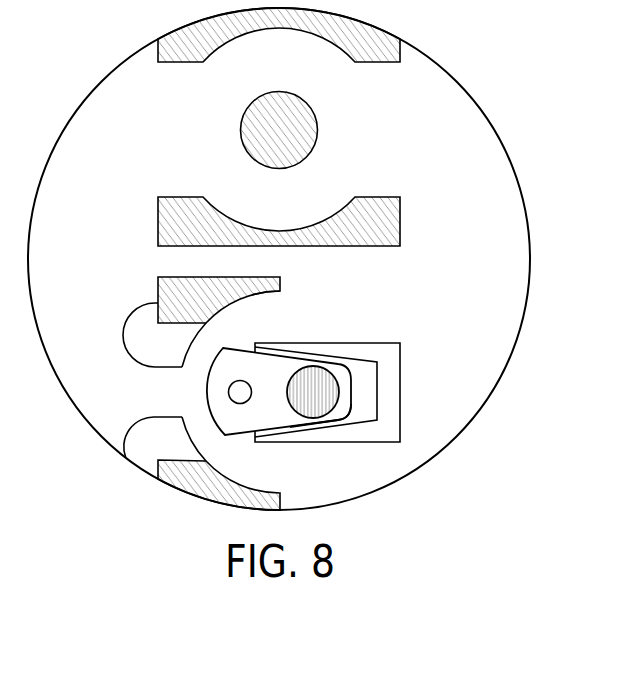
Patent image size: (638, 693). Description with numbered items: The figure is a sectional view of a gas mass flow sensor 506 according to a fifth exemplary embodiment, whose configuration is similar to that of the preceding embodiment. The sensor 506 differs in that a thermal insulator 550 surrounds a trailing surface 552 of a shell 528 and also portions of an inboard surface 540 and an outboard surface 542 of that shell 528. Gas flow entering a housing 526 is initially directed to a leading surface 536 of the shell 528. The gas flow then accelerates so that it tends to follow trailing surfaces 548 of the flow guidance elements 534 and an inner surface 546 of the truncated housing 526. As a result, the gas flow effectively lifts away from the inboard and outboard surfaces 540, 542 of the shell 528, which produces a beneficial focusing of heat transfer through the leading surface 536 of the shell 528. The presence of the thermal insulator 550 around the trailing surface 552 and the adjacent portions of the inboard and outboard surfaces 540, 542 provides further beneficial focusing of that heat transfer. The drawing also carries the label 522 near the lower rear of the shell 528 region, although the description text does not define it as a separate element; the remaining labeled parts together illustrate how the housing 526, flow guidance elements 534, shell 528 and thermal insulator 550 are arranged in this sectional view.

The gas mass flow sensor 506 is at (463, 88).
The slot lower wall 522 is at (355, 398).
The housing 526 is at (158, 283).
The shell 528 is at (347, 417).
The flow guidance elements 534 is at (126, 335).
The leading surface 536 is at (208, 395).
The inboard surface 540 is at (331, 373).
The outboard surface 542 is at (305, 427).
The inner surface 546 is at (252, 294).
The trailing surfaces 548 is at (199, 331).
The thermal insulator 550 is at (400, 400).
The trailing surface 552 is at (355, 380).